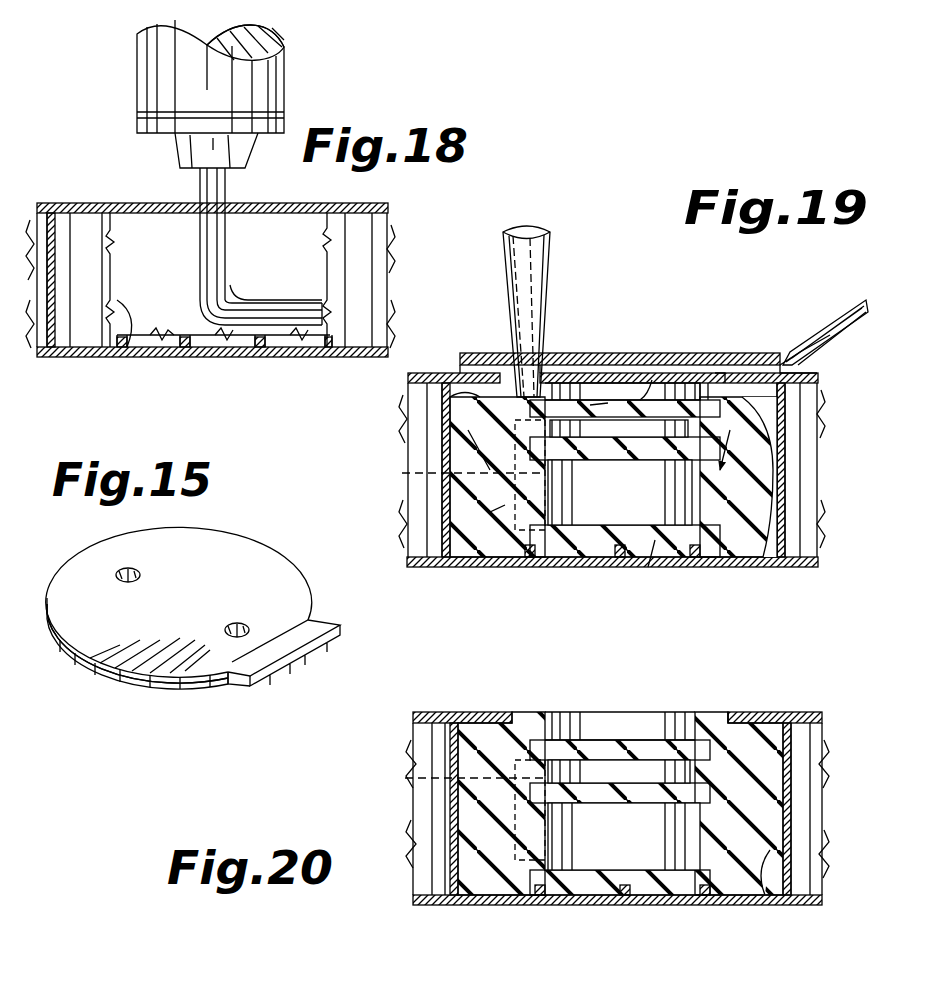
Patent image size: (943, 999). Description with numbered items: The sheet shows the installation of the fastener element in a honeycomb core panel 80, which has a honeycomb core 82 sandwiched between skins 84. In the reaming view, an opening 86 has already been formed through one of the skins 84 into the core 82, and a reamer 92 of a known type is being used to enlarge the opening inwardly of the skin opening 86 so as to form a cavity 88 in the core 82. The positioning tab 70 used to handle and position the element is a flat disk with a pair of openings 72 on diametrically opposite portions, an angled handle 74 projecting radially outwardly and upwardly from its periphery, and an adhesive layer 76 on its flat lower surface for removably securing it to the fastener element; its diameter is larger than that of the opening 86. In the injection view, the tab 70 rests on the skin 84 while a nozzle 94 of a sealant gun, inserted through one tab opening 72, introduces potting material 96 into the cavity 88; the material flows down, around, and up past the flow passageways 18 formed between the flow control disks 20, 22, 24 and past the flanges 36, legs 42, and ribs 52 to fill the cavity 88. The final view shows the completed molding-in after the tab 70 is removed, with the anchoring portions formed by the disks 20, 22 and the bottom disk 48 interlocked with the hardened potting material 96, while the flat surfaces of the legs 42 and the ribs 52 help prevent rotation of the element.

In FIG. 19, the flow passageways 18 is at (656, 373).
In FIG. 19, the inner flow control disk 20 is at (610, 520).
In FIG. 20, the inner flow control disk 20 is at (645, 850).
In FIG. 19, the intermediate flow control disk 22 is at (619, 428).
In FIG. 20, the intermediate flow control disk 22 is at (578, 740).
In FIG. 19, the outer flow control disk 24 is at (626, 372).
In FIG. 20, the outer flow control disk 24 is at (626, 735).
In FIG. 19, the outer flange portions 36 is at (783, 421).
In FIG. 20, the outer flange portions 36 is at (822, 712).
In FIG. 20, the flat legs 42 is at (405, 778).
In FIG. 19, the circular disk 48 is at (695, 557).
In FIG. 20, the circular disk 48 is at (725, 895).
In FIG. 19, the strengthening ribs 52 is at (420, 472).
In FIG. 20, the strengthening ribs 52 is at (490, 895).
In FIG. 15, the positioning tab 70 is at (268, 508).
In FIG. 19, the positioning tab 70 is at (555, 350).
In FIG. 15, the tab openings 72 is at (135, 568).
In FIG. 19, the tab openings 72 is at (704, 372).
In FIG. 15, the angled handle 74 is at (328, 618).
In FIG. 19, the angled handle 74 is at (815, 330).
In FIG. 15, the adhesive layer 76 is at (70, 655).
In FIG. 19, the adhesive layer 76 is at (800, 358).
In FIG. 18, the honeycomb core panel 80 is at (75, 365).
In FIG. 19, the honeycomb core panel 80 is at (438, 360).
In FIG. 20, the honeycomb core panel 80 is at (428, 710).
In FIG. 18, the honeycomb core 82 is at (58, 213).
In FIG. 19, the honeycomb core 82 is at (422, 497).
In FIG. 20, the honeycomb core 82 is at (430, 823).
In FIG. 18, the skins 84 is at (372, 203).
In FIG. 19, the skins 84 is at (808, 372).
In FIG. 20, the skins 84 is at (780, 712).
In FIG. 18, the opening 86 is at (155, 203).
In FIG. 19, the opening 86 is at (730, 383).
In FIG. 20, the opening 86 is at (727, 735).
In FIG. 18, the cavity 88 is at (128, 357).
In FIG. 19, the cavity 88 is at (470, 567).
In FIG. 20, the cavity 88 is at (785, 905).
In FIG. 18, the reamer 92 is at (126, 112).
In FIG. 19, the nozzle 94 is at (530, 265).
In FIG. 19, the potting material 96 is at (765, 567).
In FIG. 20, the potting material 96 is at (481, 740).